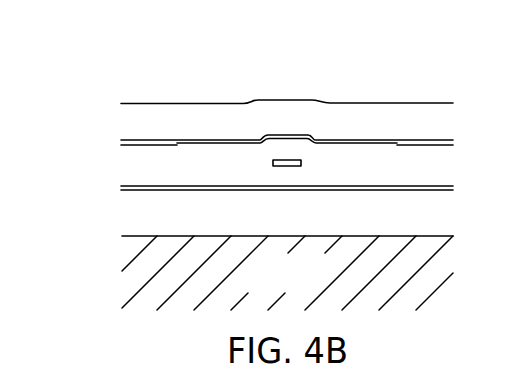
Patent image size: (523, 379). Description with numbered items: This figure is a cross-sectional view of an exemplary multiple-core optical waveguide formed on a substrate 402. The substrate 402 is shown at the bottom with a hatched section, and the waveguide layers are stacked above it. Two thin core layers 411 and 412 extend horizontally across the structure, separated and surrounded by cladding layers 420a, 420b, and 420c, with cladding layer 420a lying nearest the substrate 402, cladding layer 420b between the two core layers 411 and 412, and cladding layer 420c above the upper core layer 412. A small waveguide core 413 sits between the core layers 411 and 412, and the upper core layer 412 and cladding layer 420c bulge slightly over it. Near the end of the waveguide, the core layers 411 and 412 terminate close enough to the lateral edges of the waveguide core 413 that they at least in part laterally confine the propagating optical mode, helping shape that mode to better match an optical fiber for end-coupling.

The substrate 402 is at (300, 285).
The core layer 411 is at (336, 187).
The core layer 412 is at (222, 140).
The waveguide core 413 is at (286, 160).
The cladding layer 420a is at (158, 218).
The cladding layer 420b is at (417, 162).
The cladding layer 420c is at (158, 117).